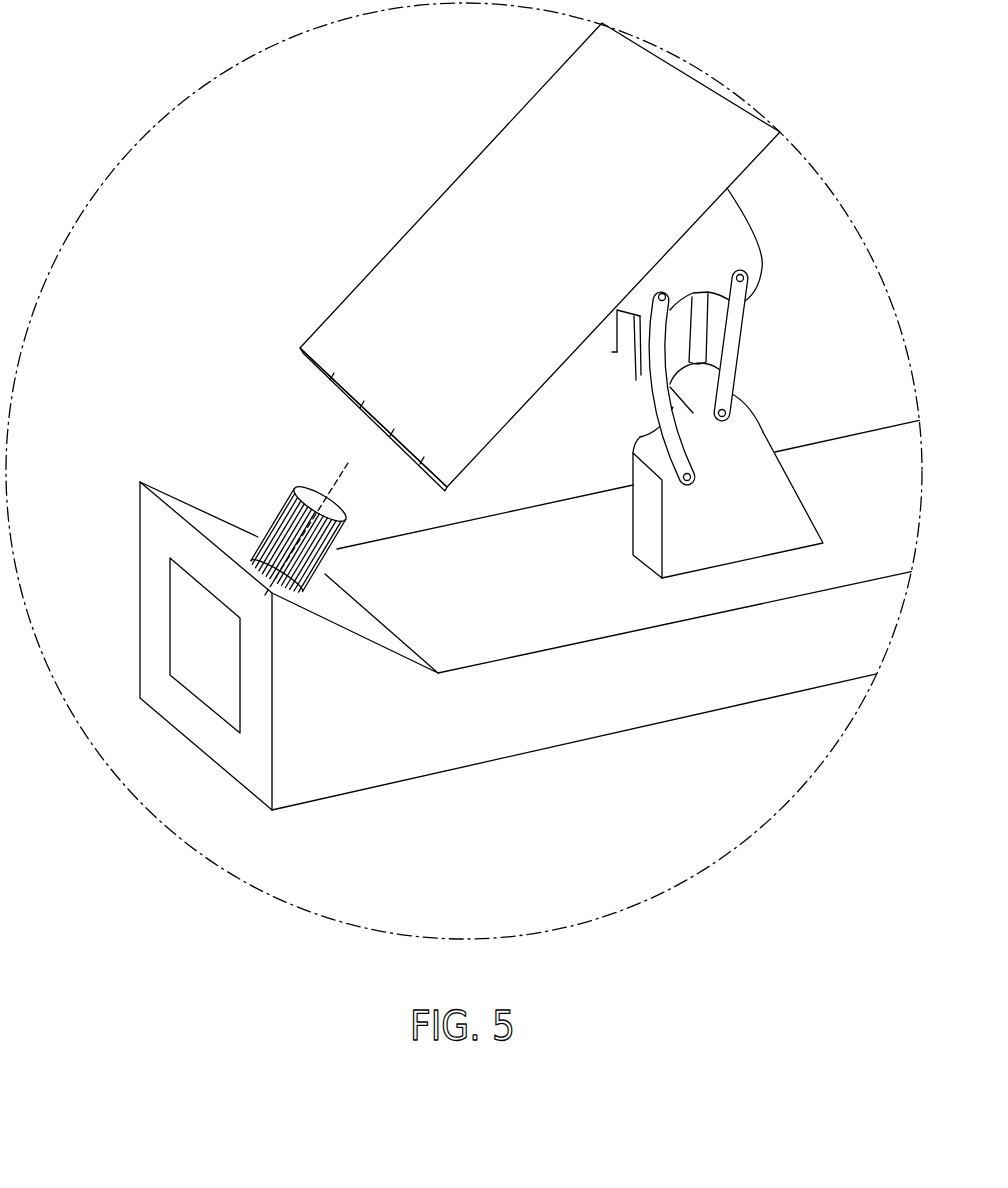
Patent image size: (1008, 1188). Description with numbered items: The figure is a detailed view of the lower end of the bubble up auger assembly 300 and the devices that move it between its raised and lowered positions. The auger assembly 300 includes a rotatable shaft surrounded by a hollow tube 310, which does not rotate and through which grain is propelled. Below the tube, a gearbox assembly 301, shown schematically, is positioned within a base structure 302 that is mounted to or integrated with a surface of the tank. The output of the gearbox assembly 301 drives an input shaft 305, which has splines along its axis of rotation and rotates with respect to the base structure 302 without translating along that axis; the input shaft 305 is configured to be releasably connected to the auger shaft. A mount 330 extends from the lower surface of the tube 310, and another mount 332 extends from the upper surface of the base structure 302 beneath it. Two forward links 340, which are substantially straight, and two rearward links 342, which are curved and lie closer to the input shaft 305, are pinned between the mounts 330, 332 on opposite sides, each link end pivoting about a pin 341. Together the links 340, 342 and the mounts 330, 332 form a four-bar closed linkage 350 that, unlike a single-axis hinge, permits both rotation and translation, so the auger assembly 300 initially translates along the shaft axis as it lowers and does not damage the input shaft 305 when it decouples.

The bubble up auger assembly 300 is at (519, 257).
The hollow tube 310 is at (373, 419).
The gearbox assembly 301 is at (208, 705).
The base structure 302 is at (529, 615).
The input shaft 305 is at (337, 550).
The mount 330 is at (733, 242).
The mount 332 is at (780, 523).
The forward links 340 is at (703, 318).
The pin 341 is at (723, 416).
The rearward links 342 is at (660, 367).
The 4-bar closed linkage 350 is at (763, 365).